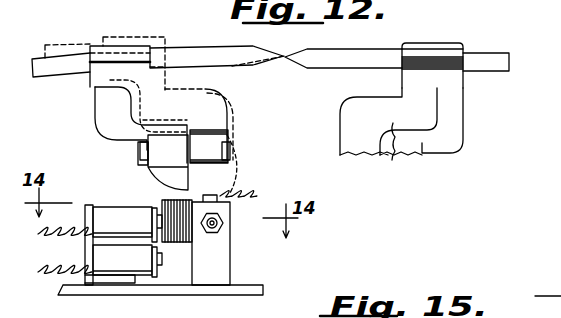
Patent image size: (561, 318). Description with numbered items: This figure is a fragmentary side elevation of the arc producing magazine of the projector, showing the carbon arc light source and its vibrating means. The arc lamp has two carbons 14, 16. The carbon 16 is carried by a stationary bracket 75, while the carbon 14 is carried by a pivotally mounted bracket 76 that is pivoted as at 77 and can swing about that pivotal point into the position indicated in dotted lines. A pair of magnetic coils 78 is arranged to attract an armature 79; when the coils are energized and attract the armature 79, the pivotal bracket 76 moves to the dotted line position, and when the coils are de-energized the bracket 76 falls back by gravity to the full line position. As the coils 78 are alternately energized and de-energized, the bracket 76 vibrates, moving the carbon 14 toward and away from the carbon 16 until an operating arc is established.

The carbon 14 is at (207, 62).
The carbon 16 is at (340, 57).
The stationary bracket 75 is at (392, 158).
The pivotally mounted bracket 76 is at (213, 113).
The pivot 77 is at (220, 233).
The magnetic coils 78 is at (123, 253).
The armature 79 is at (170, 270).